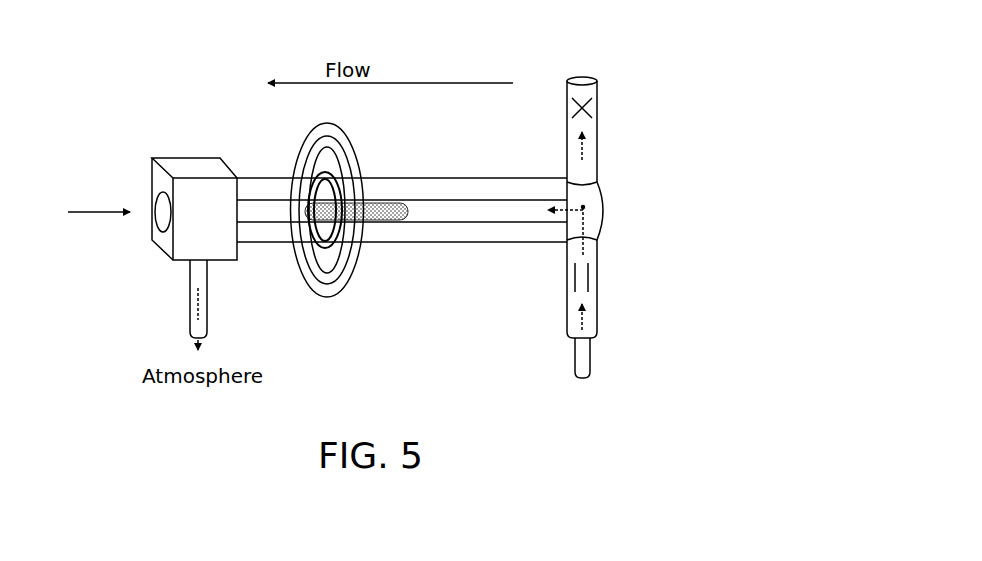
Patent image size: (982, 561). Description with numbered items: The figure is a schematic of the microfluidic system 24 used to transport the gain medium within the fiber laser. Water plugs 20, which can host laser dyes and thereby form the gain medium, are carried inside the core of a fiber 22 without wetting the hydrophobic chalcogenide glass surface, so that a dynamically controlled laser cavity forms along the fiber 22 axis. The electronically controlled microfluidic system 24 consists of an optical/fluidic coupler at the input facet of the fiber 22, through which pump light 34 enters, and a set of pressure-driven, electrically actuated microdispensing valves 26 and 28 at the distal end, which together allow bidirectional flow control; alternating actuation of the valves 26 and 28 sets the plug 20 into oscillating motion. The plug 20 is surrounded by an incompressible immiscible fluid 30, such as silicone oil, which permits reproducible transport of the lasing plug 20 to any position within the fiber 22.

The water plug 20 is at (377, 224).
The fiber 22 is at (456, 178).
The microfluidic system 24 is at (612, 152).
The microdispensing valve 26 is at (599, 326).
The microdispensing valve 28 is at (598, 81).
The incompressible immiscible fluid 30 is at (487, 212).
The pump light 34 is at (85, 212).